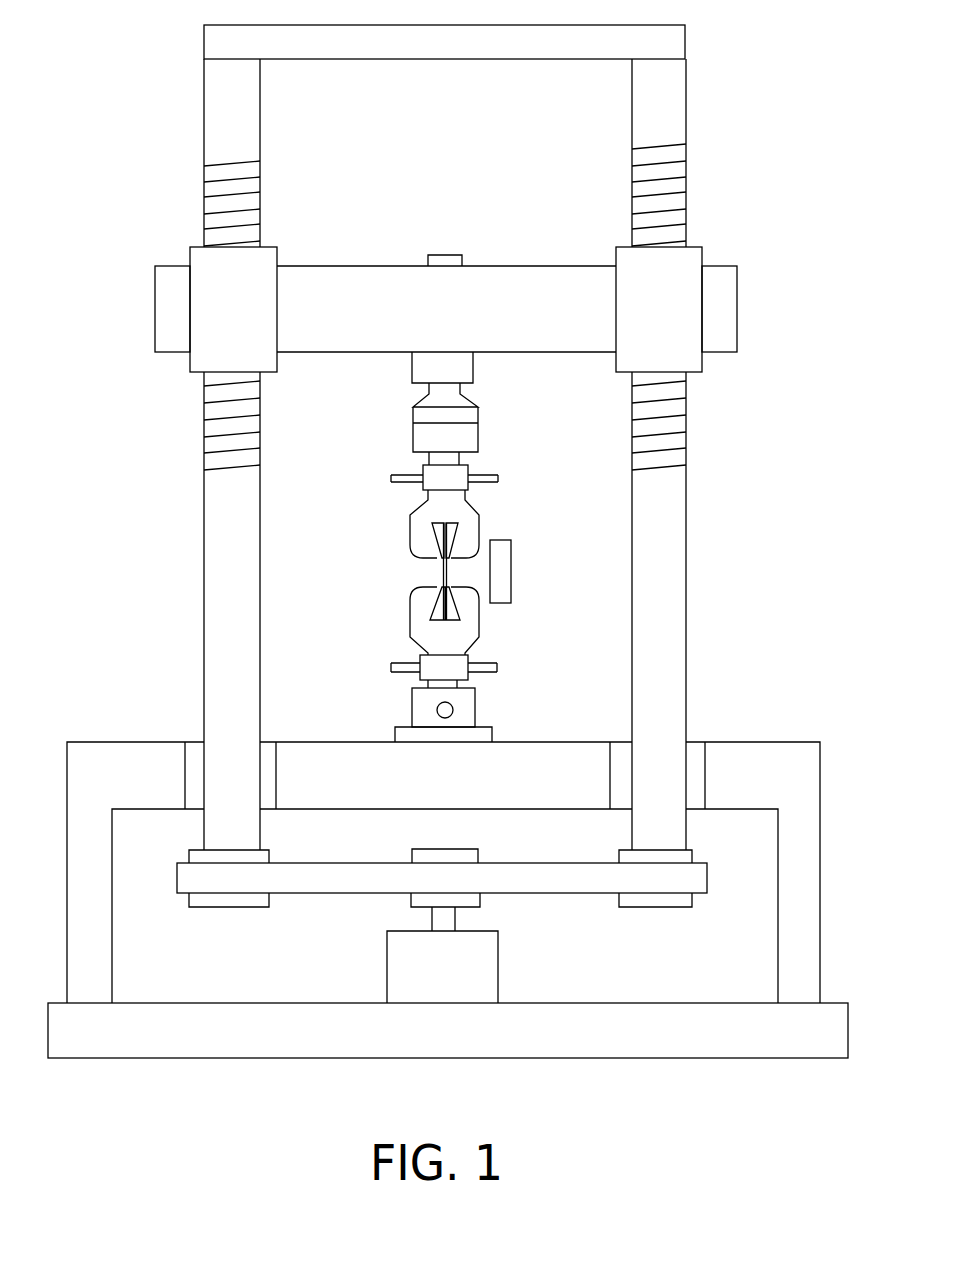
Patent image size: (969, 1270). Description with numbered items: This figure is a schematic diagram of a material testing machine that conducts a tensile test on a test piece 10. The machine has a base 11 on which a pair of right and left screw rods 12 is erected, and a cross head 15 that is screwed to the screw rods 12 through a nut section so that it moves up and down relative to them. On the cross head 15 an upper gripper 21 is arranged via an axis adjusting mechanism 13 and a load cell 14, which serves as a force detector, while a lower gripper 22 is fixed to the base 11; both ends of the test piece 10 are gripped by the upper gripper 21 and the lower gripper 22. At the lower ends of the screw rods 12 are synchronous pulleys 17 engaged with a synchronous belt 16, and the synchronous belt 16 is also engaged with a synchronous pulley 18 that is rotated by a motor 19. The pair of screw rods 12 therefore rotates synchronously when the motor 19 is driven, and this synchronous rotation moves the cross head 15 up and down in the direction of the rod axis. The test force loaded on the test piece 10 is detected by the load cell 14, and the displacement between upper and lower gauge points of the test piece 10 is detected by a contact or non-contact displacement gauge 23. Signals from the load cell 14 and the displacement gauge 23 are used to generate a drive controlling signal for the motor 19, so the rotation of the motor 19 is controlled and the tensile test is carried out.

The test piece 10 is at (443, 570).
The base 11 is at (752, 755).
The screw rods 12 is at (218, 510).
The axis adjusting mechanism 13 is at (460, 363).
The load cell 14 is at (463, 435).
The cross head 15 is at (331, 290).
The synchronous belt 16 is at (338, 878).
The synchronous pulleys 17 is at (223, 903).
The synchronous pulley 18 is at (470, 857).
The motor 19 is at (482, 958).
The upper gripper 21 is at (425, 533).
The lower gripper 22 is at (420, 610).
The displacement gauge 23 is at (500, 570).